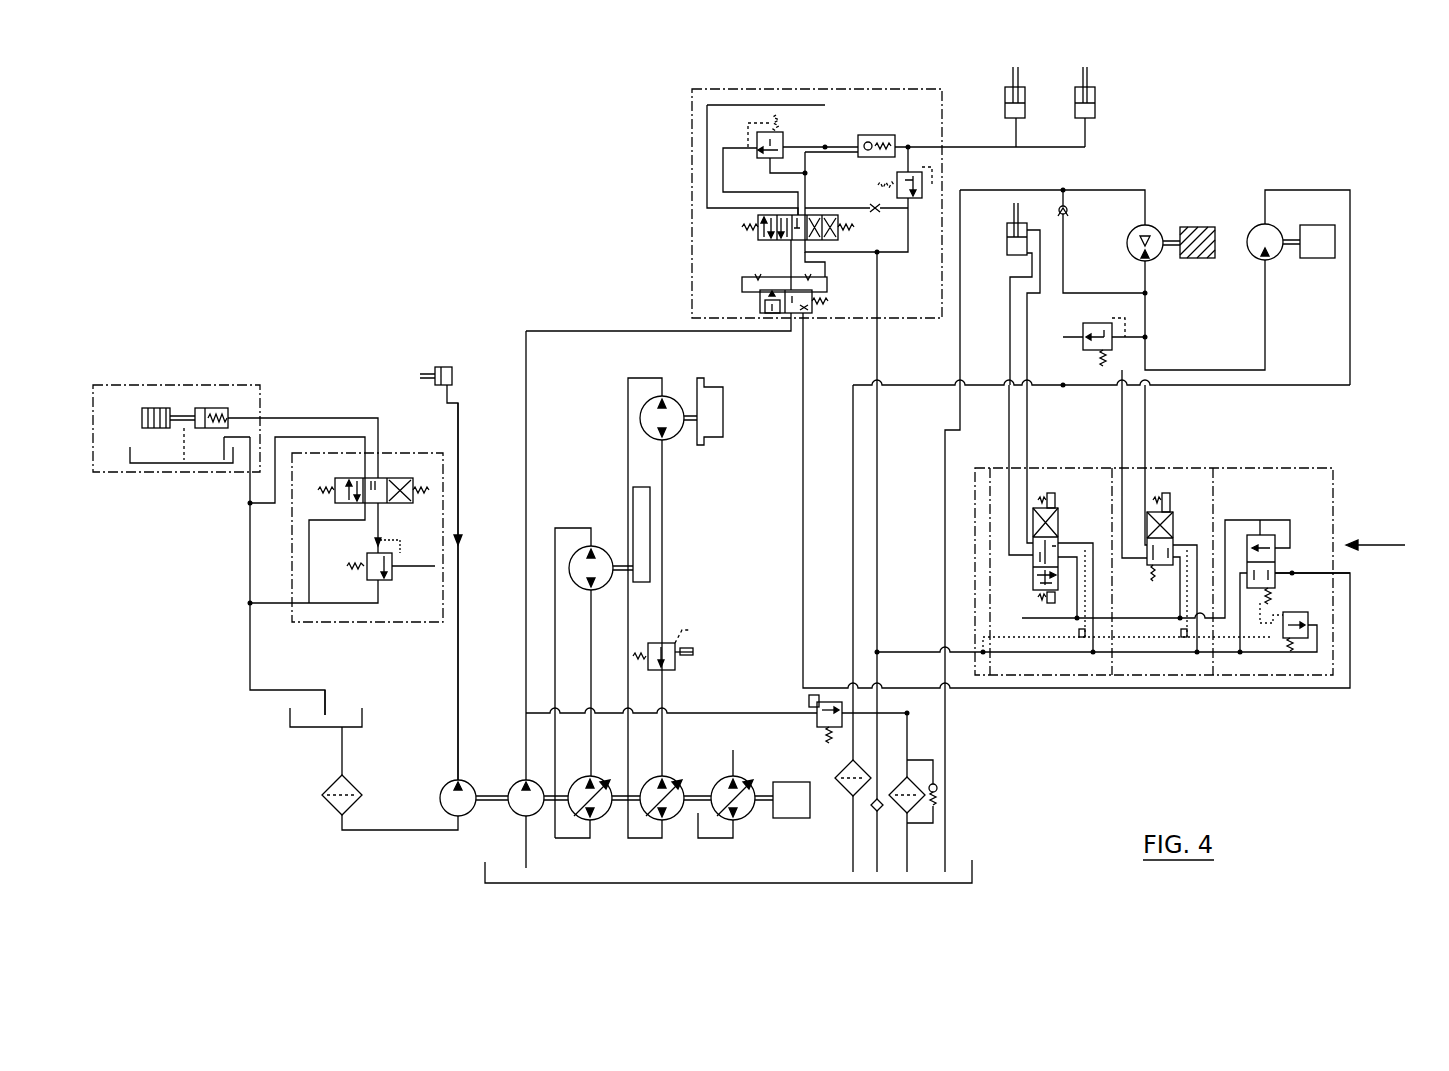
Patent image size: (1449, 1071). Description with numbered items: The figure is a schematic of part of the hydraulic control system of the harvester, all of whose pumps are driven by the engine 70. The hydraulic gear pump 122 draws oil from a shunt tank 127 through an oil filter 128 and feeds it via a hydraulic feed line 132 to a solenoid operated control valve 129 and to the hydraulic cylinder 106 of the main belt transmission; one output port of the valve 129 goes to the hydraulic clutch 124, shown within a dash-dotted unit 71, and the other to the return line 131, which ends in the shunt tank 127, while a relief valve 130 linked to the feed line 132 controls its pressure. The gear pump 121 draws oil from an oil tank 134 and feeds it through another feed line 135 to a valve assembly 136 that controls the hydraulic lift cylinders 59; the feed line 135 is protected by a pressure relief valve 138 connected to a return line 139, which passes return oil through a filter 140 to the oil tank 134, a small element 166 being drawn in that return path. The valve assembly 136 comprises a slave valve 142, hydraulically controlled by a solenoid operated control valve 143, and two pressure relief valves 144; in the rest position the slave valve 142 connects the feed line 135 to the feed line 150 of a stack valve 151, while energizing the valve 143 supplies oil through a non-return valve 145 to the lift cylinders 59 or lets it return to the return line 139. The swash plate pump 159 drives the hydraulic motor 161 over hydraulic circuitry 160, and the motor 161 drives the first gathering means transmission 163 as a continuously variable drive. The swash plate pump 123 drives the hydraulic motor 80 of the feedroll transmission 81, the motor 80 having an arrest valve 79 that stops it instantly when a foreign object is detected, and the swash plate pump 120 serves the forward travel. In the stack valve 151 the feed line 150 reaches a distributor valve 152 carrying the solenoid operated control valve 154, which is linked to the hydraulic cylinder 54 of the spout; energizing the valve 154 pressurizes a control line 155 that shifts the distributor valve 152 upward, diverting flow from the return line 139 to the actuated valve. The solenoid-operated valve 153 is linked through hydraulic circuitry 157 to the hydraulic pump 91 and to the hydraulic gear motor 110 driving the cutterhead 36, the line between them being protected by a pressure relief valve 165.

The cutterhead 36 is at (1195, 227).
The hydraulic cylinder 54 is at (1007, 247).
The hydraulic lift cylinders 59 is at (1025, 98).
The engine 70 is at (800, 818).
The control unit 71 is at (156, 385).
The arrest valve 79 is at (675, 667).
The hydraulic motor 80 is at (667, 396).
The feedroll transmission 81 is at (717, 383).
The hydraulic pump 91 is at (1263, 224).
The hydraulic cylinder 106 is at (441, 367).
The hydraulic gear motor 110 is at (1127, 240).
The swash plate pump 120 is at (743, 822).
The gear pump 121 is at (513, 786).
The hydraulic gear pump 122 is at (445, 786).
The swash plate pump 123 is at (672, 822).
The hydraulic clutch 124 is at (218, 408).
The shunt tank 127 is at (290, 712).
The oil filter 128 is at (323, 786).
The solenoid operated control valve 129 is at (392, 478).
The relief valve 130 is at (390, 580).
The return line 131 is at (250, 565).
The hydraulic feed line 132 is at (458, 660).
The oil tank 134 is at (485, 870).
The feed line 135 is at (527, 421).
The valve assembly 136 is at (692, 242).
The pressure relief valve 138 is at (817, 725).
The return line 139 is at (877, 570).
The filter 140 is at (917, 807).
The slave valve 142 is at (760, 297).
The solenoid operated control valve 143 is at (763, 237).
The pressure relief valves 144 is at (758, 158).
The non-return valve 145 is at (870, 135).
The feed line 150 is at (803, 543).
The stack valve 151 is at (1212, 571).
The distributor valve 152 is at (1275, 547).
The solenoid-operated valve 153 is at (1197, 504).
The solenoid operated control valve 154 is at (1087, 509).
The control line 155 is at (1007, 637).
The hydraulic circuitry 157 is at (1267, 342).
The swash plate pump 159 is at (598, 820).
The hydraulic circuitry 160 is at (554, 628).
The hydraulic motor 161 is at (569, 567).
The first gathering means transmission 163 is at (633, 487).
The pressure relief valve 165 is at (1083, 331).
The check valve 166 is at (883, 809).